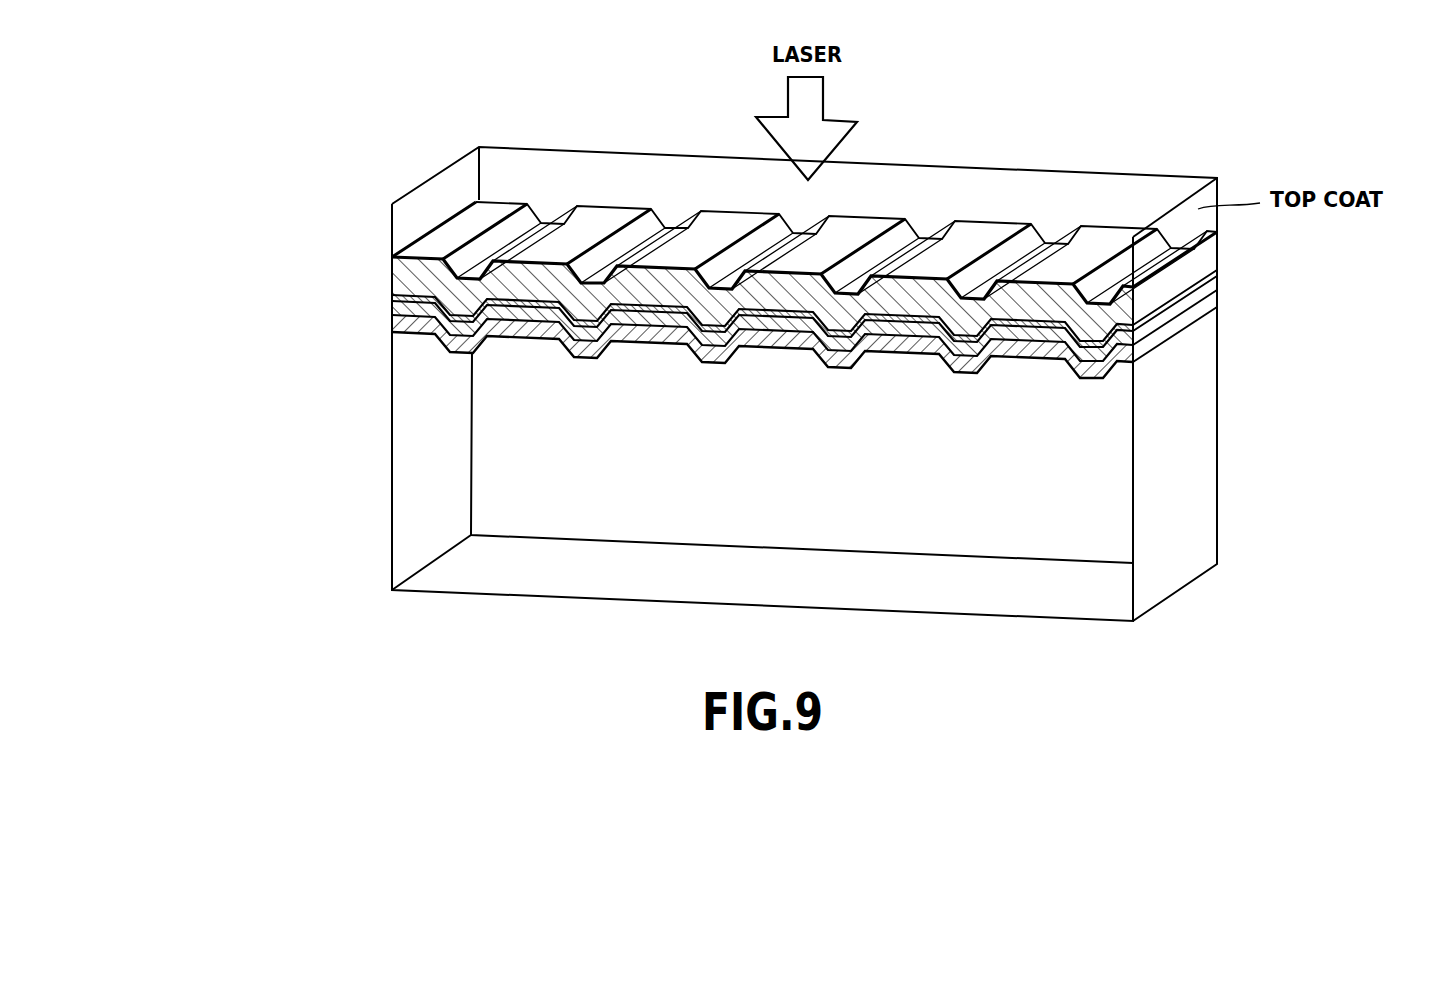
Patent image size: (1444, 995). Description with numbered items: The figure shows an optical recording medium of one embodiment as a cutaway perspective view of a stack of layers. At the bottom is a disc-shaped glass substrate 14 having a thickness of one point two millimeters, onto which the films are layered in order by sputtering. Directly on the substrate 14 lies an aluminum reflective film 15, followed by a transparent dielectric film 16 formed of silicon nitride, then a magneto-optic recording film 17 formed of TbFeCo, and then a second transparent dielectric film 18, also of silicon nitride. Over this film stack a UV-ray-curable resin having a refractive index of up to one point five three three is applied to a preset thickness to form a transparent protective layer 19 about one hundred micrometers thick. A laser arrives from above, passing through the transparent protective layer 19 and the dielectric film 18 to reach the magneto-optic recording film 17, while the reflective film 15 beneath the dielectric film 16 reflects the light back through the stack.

The substrate 14 is at (1195, 492).
The aluminum reflective film 15 is at (390, 327).
The transparent dielectric film 16 is at (393, 307).
The magneto-optic recording film 17 is at (395, 297).
The transparent dielectric film 18 is at (400, 278).
The transparent protective layer 19 is at (400, 225).